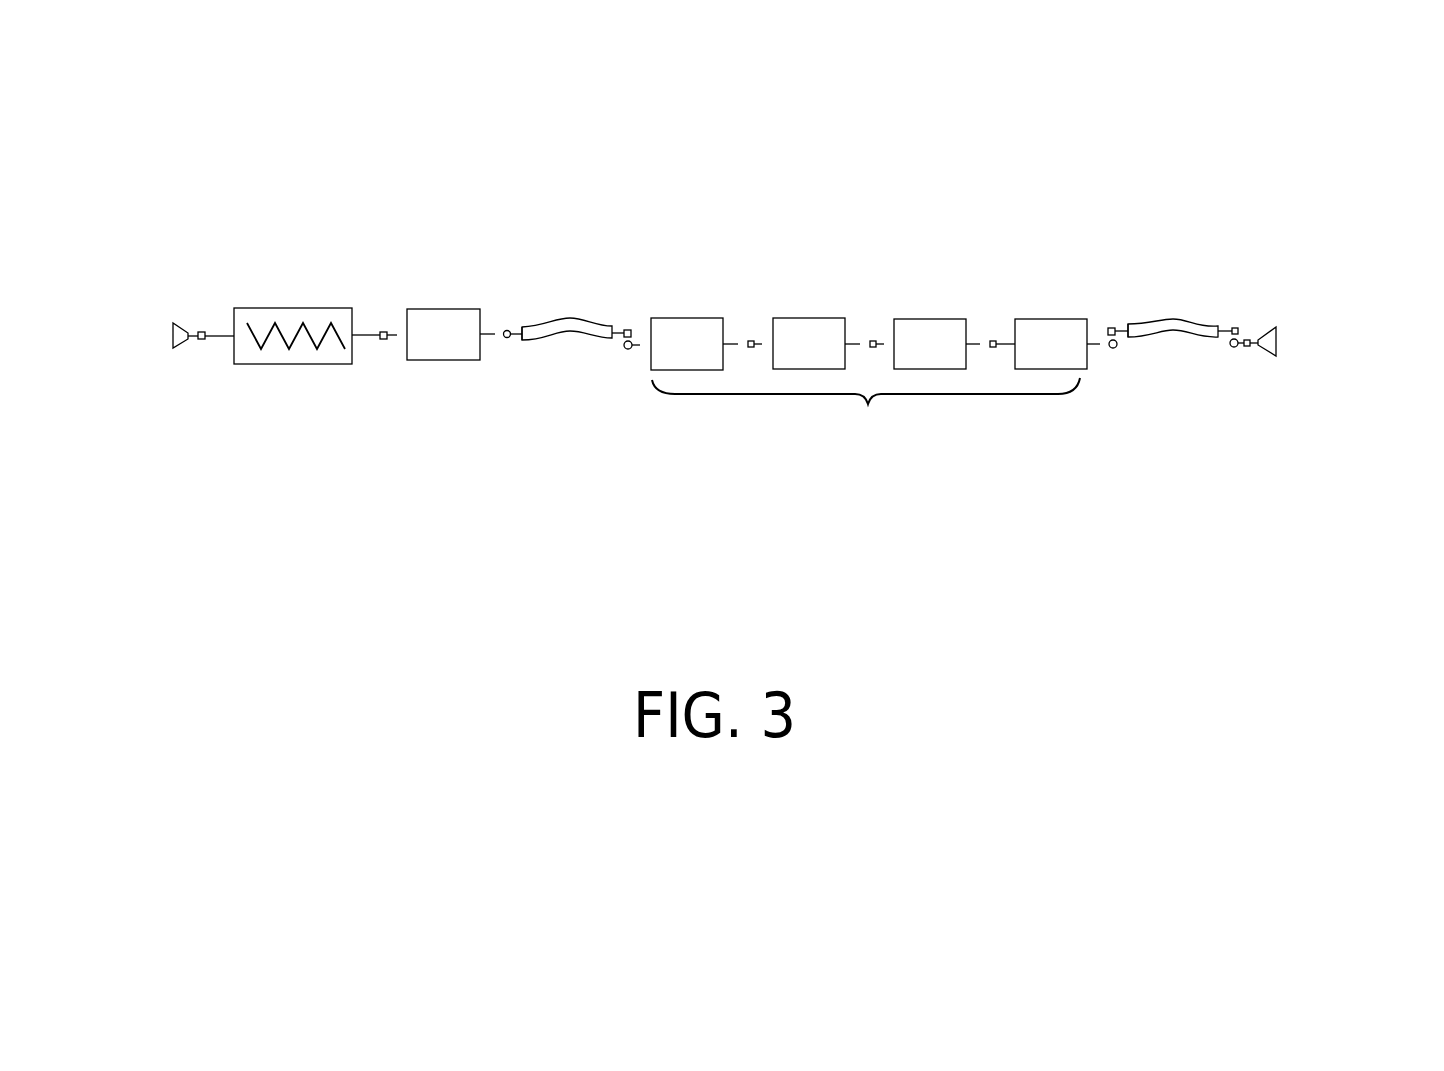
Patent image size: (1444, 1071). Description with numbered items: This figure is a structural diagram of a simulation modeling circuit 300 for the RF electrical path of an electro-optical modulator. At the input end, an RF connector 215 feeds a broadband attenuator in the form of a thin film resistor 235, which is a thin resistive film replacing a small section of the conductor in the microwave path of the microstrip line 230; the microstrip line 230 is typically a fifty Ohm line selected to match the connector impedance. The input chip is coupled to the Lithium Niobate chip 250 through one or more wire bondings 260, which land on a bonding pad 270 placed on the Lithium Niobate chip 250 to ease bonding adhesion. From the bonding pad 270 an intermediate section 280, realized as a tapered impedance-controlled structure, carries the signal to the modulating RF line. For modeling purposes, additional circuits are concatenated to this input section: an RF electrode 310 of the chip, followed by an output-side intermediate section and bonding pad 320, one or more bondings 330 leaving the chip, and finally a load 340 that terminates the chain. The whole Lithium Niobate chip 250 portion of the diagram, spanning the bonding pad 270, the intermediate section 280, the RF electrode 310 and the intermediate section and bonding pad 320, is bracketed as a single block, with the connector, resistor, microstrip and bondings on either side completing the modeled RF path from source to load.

The simulation modeling circuit 300 is at (240, 616).
The RF connector 215 is at (174, 358).
The thin film resistor 235 is at (302, 305).
The microstrip line 230 is at (452, 368).
The wire bondings 260 is at (527, 313).
The bonding pad 270 is at (652, 312).
The intermediate section 280 is at (795, 313).
The RF electrode 310 is at (939, 311).
The intermediate section and bonding pad 320 is at (1078, 312).
The Lithium Niobate chip 250 is at (866, 432).
The bondings 330 is at (1210, 316).
The load 340 is at (1286, 362).